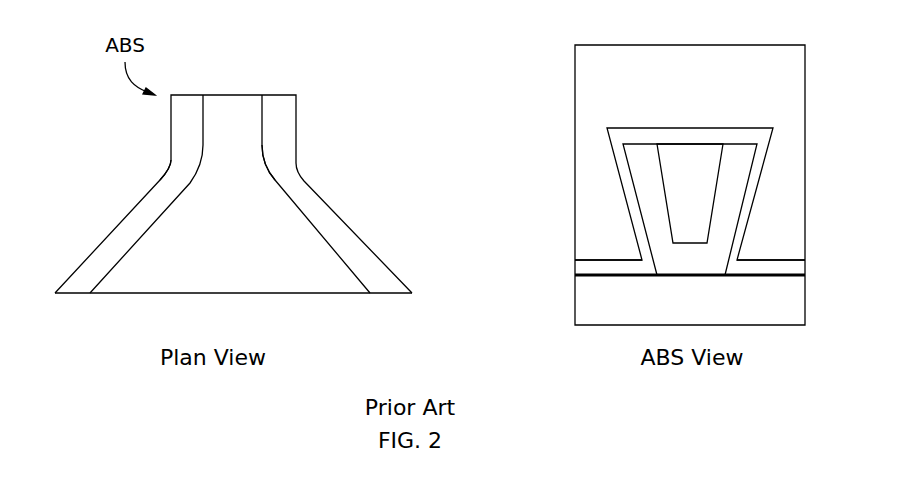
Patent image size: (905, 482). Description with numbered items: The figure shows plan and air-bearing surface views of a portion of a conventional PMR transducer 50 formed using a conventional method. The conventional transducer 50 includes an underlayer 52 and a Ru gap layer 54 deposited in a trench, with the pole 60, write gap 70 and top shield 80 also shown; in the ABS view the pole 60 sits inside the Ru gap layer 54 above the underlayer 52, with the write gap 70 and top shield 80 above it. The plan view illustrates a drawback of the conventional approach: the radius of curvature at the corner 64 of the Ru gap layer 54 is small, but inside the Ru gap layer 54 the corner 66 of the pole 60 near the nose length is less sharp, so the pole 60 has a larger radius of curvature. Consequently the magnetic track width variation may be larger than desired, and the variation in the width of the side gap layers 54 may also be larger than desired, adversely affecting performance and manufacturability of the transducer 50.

The conventional PMR transducer 50 is at (398, 22).
The underlayer 52 is at (575, 292).
The Ru gap layer 54 is at (118, 225).
The pole 60 is at (122, 293).
The corner of the Ru gap layer 64 is at (165, 158).
The corner of the pole 66 is at (278, 175).
The write gap 70 is at (575, 268).
The top shield 80 is at (575, 70).